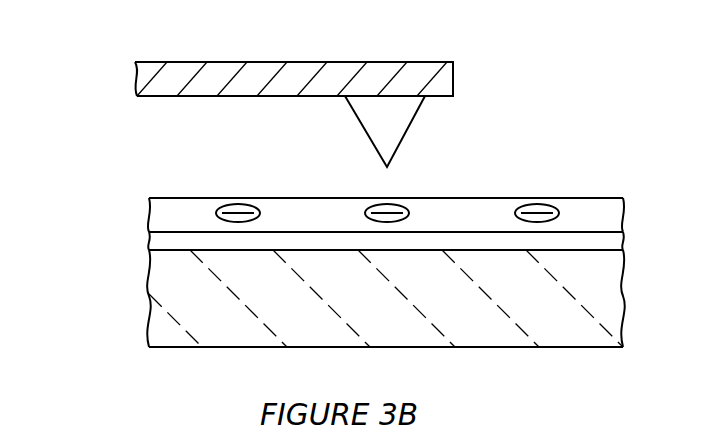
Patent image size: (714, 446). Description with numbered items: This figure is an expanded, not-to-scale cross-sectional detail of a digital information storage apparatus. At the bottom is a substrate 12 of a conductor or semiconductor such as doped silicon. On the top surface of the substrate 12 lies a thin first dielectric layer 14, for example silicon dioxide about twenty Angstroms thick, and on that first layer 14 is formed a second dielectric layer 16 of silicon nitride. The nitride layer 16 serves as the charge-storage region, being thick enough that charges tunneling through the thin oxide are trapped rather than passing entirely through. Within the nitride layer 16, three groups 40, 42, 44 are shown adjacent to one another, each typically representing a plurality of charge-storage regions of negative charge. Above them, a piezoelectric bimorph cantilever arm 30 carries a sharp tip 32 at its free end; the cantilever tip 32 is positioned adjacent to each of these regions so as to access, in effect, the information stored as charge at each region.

The substrate 12 is at (149, 311).
The first dielectric layer 14 is at (149, 239).
The second dielectric layer 16 is at (149, 219).
The piezoelectric bimorph cantilever arm 30 is at (453, 80).
The sharp tip 32 is at (400, 150).
The group of charge-storage regions 40 is at (236, 204).
The group of charge-storage regions 42 is at (385, 204).
The group of charge-storage regions 44 is at (535, 204).